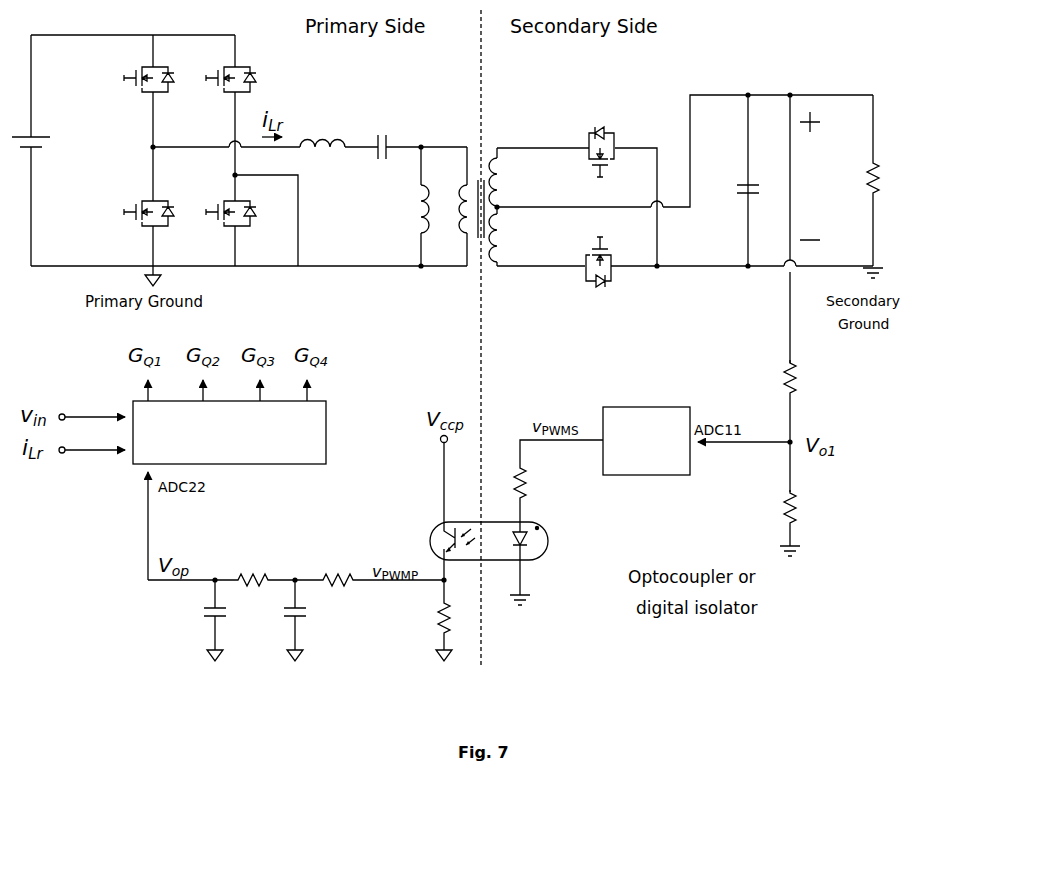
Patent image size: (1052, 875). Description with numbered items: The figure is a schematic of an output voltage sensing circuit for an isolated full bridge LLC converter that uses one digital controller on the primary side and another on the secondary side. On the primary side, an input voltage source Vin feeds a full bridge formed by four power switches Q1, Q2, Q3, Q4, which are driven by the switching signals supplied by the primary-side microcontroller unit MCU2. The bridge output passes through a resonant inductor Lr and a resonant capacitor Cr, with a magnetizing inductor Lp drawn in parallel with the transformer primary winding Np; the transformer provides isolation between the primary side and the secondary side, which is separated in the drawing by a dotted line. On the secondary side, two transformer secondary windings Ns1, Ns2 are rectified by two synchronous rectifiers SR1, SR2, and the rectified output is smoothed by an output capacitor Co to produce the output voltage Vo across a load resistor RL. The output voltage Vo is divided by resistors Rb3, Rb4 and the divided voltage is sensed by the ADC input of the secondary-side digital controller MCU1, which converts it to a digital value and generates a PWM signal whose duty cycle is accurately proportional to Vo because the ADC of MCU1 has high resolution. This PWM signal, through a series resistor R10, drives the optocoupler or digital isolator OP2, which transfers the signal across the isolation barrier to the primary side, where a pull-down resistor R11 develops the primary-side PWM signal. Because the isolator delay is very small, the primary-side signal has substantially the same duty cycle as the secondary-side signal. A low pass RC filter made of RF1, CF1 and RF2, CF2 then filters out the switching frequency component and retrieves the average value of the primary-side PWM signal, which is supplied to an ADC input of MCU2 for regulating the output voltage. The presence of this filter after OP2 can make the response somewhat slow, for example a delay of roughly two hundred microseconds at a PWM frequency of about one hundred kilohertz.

The input voltage source Vin is at (43, 150).
The power switch Q1 is at (147, 91).
The power switch Q2 is at (147, 227).
The power switch Q3 is at (229, 91).
The power switch Q4 is at (229, 227).
The resonant inductor Lr is at (322, 167).
The resonant capacitor Cr is at (380, 164).
The magnetizing inductor Lp is at (405, 206).
The transformer primary winding Np is at (451, 206).
The transformer secondary winding Ns1 is at (513, 177).
The transformer secondary winding Ns2 is at (513, 236).
The synchronous rectifier 1 SR1 is at (617, 138).
The synchronous rectifier 2 SR2 is at (617, 254).
The output capacitor Co is at (728, 180).
The output voltage Vo is at (812, 176).
The load resistor RL is at (892, 180).
The divider resistor Rb3 is at (810, 380).
The divider resistor Rb4 is at (810, 509).
The digital controller MCU1 is at (646, 441).
The microcontroller unit MCU2 is at (229, 432).
The optocoupler input resistor R10 is at (540, 484).
The optocoupler pull-down resistor R11 is at (424, 618).
The optocoupler or digital isolator OP2 is at (620, 589).
The filter resistor RF1 is at (337, 566).
The filter resistor RF2 is at (253, 566).
The filter capacitor CF1 is at (310, 620).
The filter capacitor CF2 is at (230, 620).